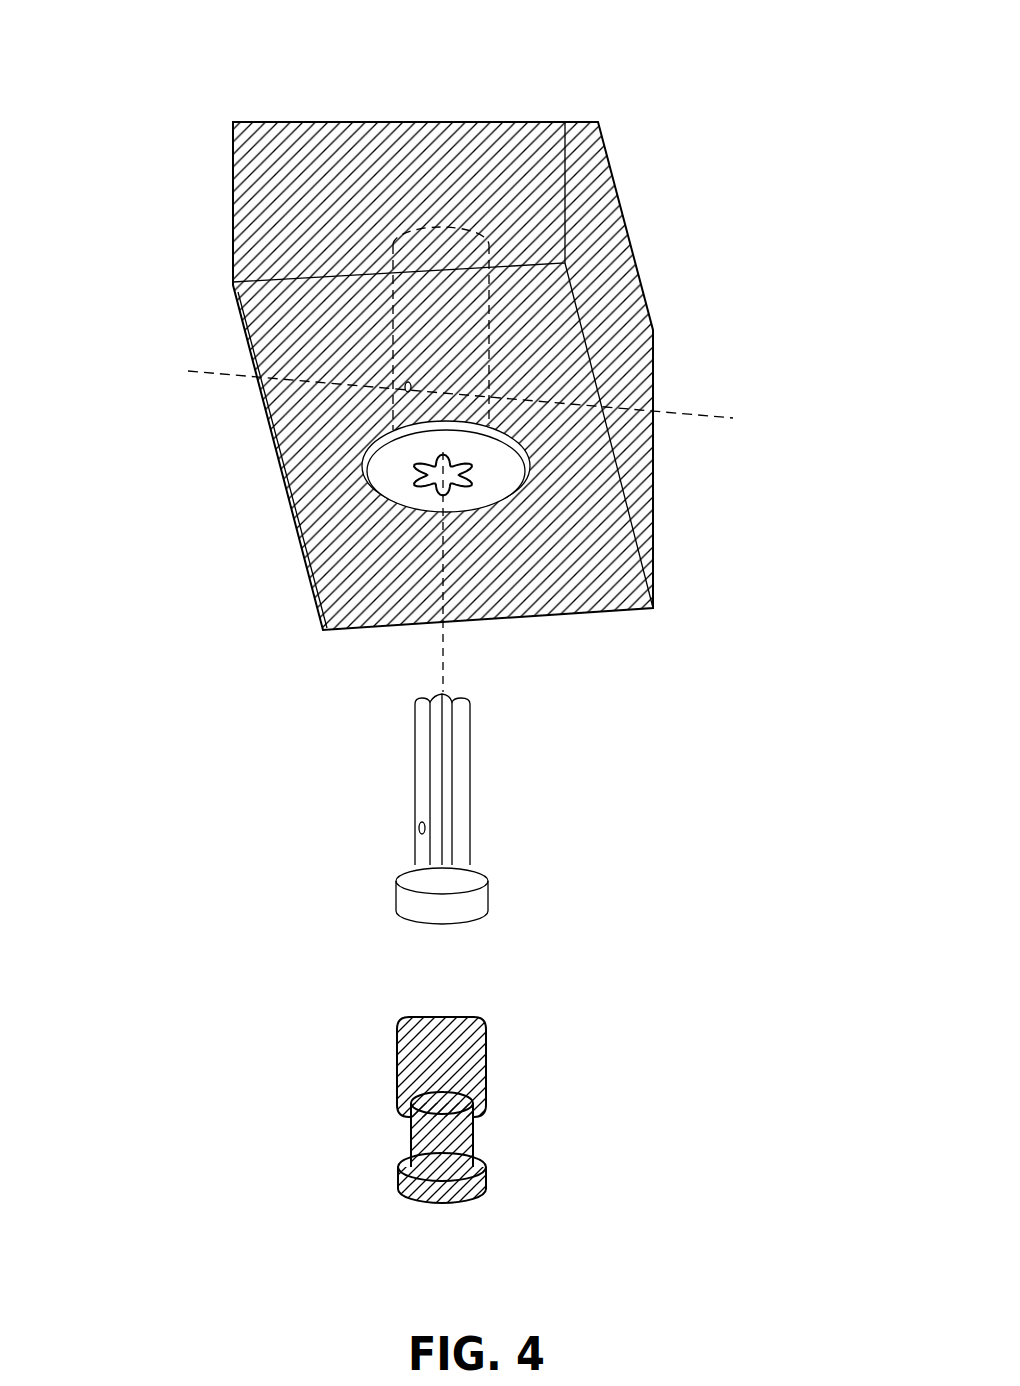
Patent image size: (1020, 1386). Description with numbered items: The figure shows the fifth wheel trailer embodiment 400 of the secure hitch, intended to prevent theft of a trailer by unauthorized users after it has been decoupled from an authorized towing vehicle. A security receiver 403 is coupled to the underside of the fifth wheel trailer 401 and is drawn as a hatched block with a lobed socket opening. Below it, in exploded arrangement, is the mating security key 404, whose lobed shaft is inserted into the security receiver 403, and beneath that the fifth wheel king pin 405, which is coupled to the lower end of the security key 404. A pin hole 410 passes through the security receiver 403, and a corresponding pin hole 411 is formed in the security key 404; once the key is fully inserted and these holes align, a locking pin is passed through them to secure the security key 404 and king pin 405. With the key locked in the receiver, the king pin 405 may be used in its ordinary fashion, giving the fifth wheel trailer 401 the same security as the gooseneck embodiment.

The 5th wheel trailer embodiment 400 is at (186, 46).
The 5th wheel trailer 401 is at (631, 170).
The security receiver 403 is at (392, 473).
The security key 404 is at (477, 907).
The 5th wheel king pin 405 is at (398, 1085).
The pin hole 410 is at (463, 397).
The pin hole 411 is at (418, 824).